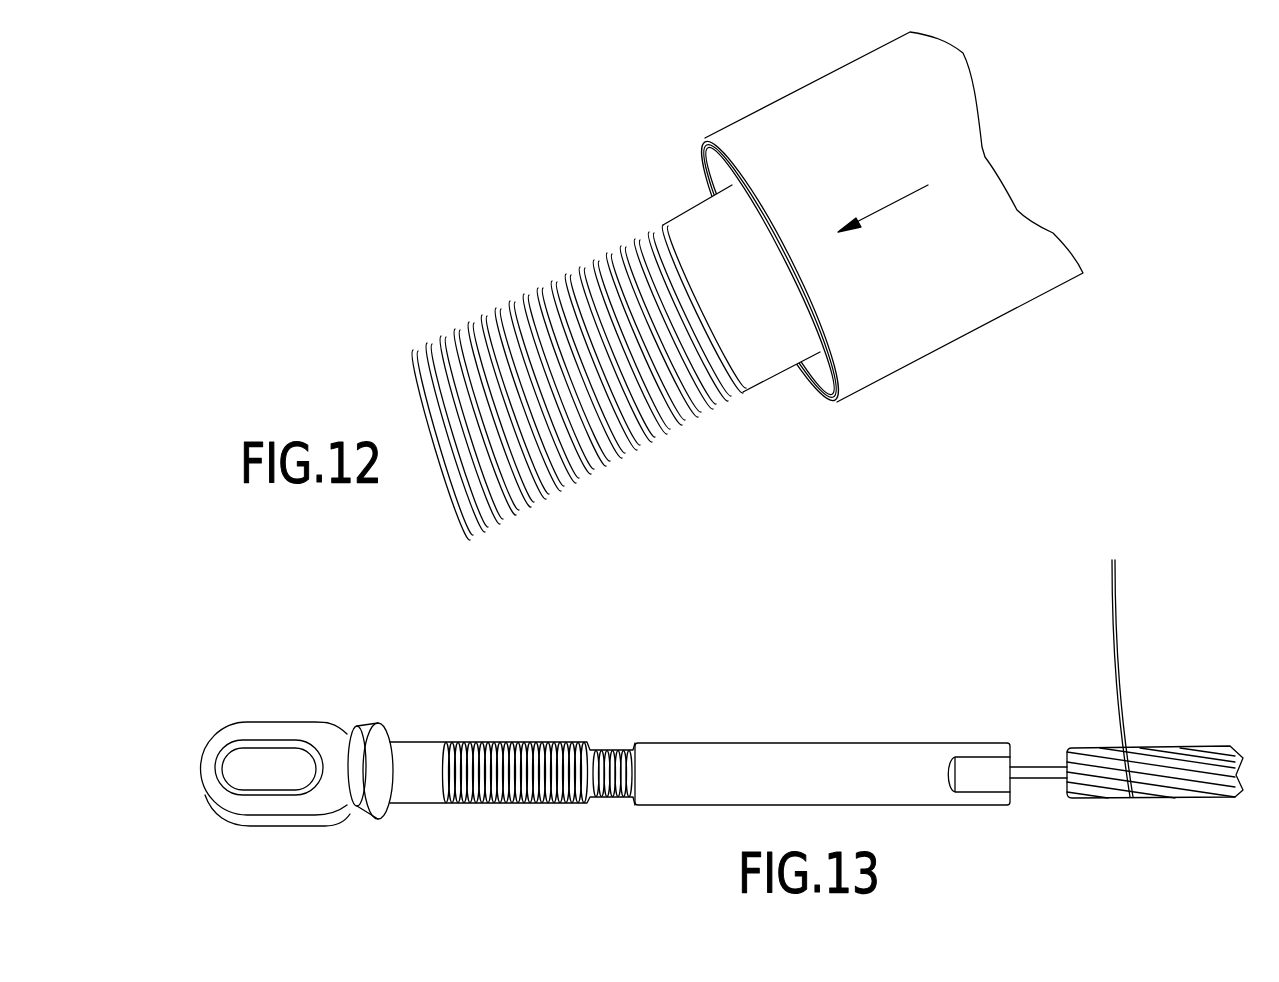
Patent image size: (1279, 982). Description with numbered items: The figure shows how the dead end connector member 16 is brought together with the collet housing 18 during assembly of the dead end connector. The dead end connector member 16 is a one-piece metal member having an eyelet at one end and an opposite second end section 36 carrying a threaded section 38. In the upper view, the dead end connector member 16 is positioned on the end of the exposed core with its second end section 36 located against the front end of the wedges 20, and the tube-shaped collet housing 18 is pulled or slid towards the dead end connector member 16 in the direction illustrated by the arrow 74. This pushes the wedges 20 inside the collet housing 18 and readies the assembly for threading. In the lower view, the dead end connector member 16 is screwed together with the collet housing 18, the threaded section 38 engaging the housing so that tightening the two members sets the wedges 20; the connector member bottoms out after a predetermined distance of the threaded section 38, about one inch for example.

In FIG. 12, the dead end connector member 16 is at (579, 369).
In FIG. 13, the dead end connector member 16 is at (423, 740).
In FIG. 12, the collet housing 18 is at (913, 357).
In FIG. 13, the collet housing 18 is at (838, 742).
In FIG. 12, the wedges 20 is at (690, 220).
In FIG. 12, the second end section 36 is at (600, 250).
In FIG. 12, the threaded section 38 is at (477, 313).
In FIG. 12, the arrow 74 is at (890, 207).